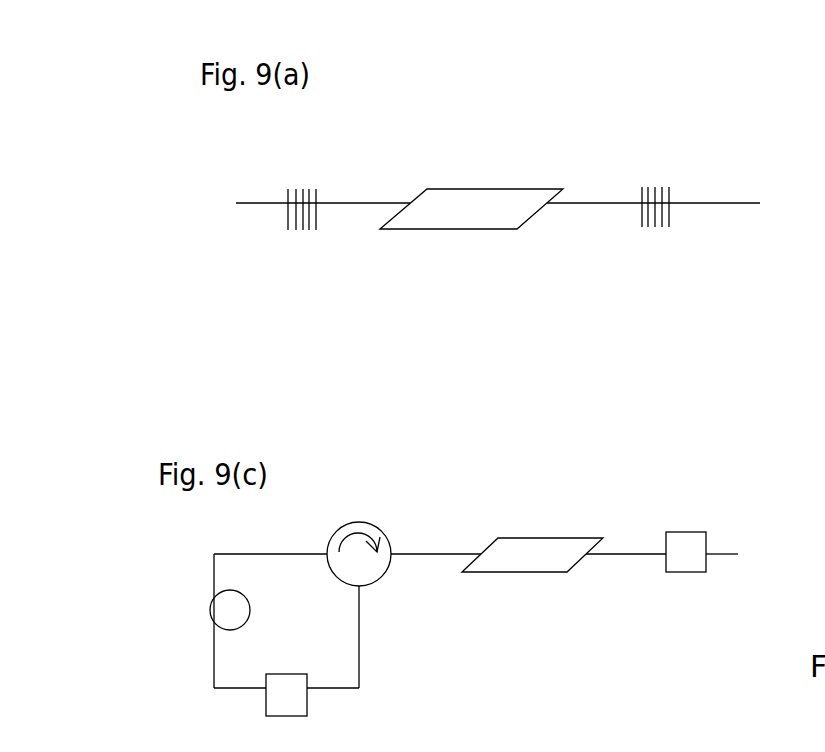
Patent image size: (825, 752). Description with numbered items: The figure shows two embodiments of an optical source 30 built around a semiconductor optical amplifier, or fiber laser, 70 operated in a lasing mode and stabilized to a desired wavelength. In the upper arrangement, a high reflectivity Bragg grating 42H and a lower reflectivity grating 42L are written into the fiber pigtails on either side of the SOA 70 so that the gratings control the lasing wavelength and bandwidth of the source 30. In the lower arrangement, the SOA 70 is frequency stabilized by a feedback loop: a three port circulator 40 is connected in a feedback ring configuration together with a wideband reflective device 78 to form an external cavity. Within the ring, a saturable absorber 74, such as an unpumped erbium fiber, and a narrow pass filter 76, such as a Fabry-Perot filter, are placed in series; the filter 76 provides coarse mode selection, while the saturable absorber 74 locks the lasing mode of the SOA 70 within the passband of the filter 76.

In FIG. 9A, the optical source 30 is at (603, 281).
In FIG. 9A, the high reflectivity Bragg grating 42H is at (298, 185).
In FIG. 9A, the lower reflectivity grating 42L is at (650, 185).
In FIG. 9A, the semiconductor optical amplifier 70 is at (468, 230).
In FIG. 9C, the semiconductor optical amplifier 70 is at (523, 572).
In FIG. 9C, the three port circulator 40 is at (361, 521).
In FIG. 9C, the saturable absorber 74 is at (209, 618).
In FIG. 9C, the narrow pass filter 76 is at (290, 717).
In FIG. 9C, the wideband reflective device 78 is at (682, 572).